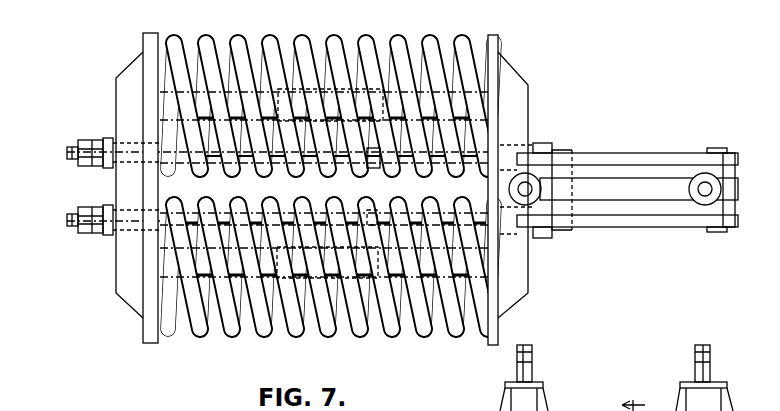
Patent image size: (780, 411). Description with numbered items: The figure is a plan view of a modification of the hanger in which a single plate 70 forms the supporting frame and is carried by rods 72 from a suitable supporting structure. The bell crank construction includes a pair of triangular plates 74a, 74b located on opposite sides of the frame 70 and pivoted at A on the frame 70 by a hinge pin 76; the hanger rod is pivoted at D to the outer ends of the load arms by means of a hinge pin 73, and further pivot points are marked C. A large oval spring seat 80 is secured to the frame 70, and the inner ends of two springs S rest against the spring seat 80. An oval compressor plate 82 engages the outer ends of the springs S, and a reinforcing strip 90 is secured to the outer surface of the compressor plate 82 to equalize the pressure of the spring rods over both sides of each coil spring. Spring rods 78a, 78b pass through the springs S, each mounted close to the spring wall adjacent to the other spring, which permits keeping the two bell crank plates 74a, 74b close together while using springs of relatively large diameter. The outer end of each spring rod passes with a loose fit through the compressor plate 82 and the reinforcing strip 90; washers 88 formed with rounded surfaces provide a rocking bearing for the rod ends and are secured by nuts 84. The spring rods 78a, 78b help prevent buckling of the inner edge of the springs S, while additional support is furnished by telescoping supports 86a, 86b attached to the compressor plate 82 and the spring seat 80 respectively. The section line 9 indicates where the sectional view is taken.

The plate 70 is at (652, 188).
The rods 72 is at (687, 387).
The hinge pin 73 is at (718, 232).
The triangular plate 74a is at (630, 153).
The triangular plate 74b is at (658, 227).
The hinge pin 76 is at (568, 238).
The spring rod 78a is at (305, 155).
The spring rod 78b is at (376, 210).
The spring seat 80 is at (490, 342).
The compressor plate 82 is at (150, 343).
The nuts 84 is at (97, 210).
The telescoping support 86a is at (232, 100).
The telescoping support 86b is at (425, 98).
The washers 88 is at (108, 235).
The reinforcing strip 90 is at (128, 292).
The pivot point A is at (567, 150).
The pins C is at (545, 143).
The pivot point D is at (717, 148).
The springs S is at (398, 46).
The section line 9 is at (633, 393).